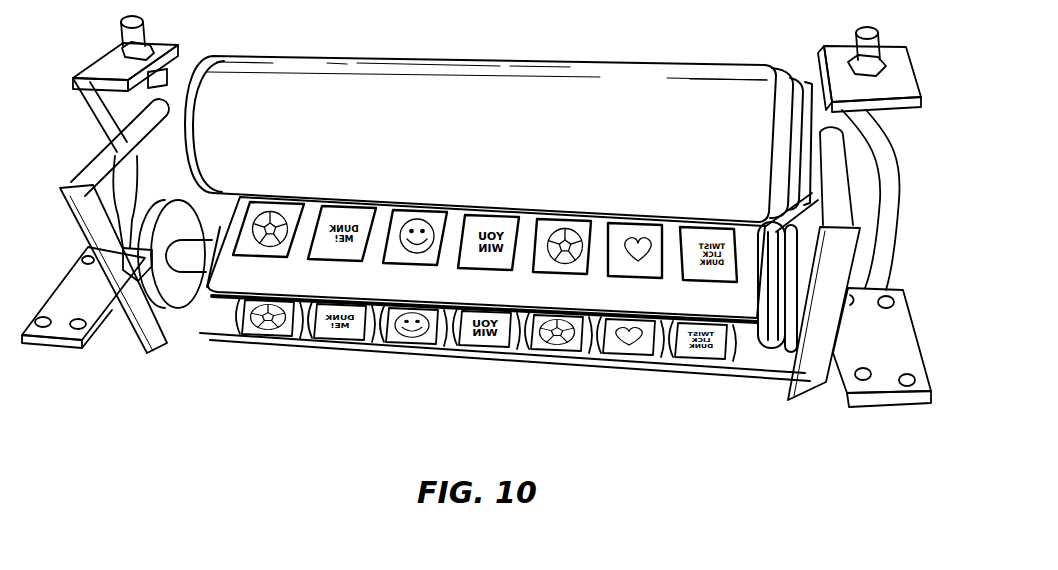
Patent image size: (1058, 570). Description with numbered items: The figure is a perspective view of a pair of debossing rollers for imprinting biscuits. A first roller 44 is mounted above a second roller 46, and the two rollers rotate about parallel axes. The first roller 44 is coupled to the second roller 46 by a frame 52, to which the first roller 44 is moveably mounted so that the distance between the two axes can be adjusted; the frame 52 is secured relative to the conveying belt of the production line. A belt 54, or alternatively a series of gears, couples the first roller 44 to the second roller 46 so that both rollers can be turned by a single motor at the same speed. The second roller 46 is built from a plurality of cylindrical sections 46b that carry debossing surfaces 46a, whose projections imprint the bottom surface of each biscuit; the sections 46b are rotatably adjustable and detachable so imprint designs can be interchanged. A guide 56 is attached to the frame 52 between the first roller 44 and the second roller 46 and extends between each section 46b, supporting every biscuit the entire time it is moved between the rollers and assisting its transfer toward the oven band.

The first roller 44 is at (647, 62).
The frame 52 is at (103, 62).
The belt 54 is at (776, 373).
The guide 56 is at (546, 287).
The second roller 46 is at (243, 325).
The debossing surfaces 46a is at (417, 325).
The cylindrical sections 46b is at (330, 325).